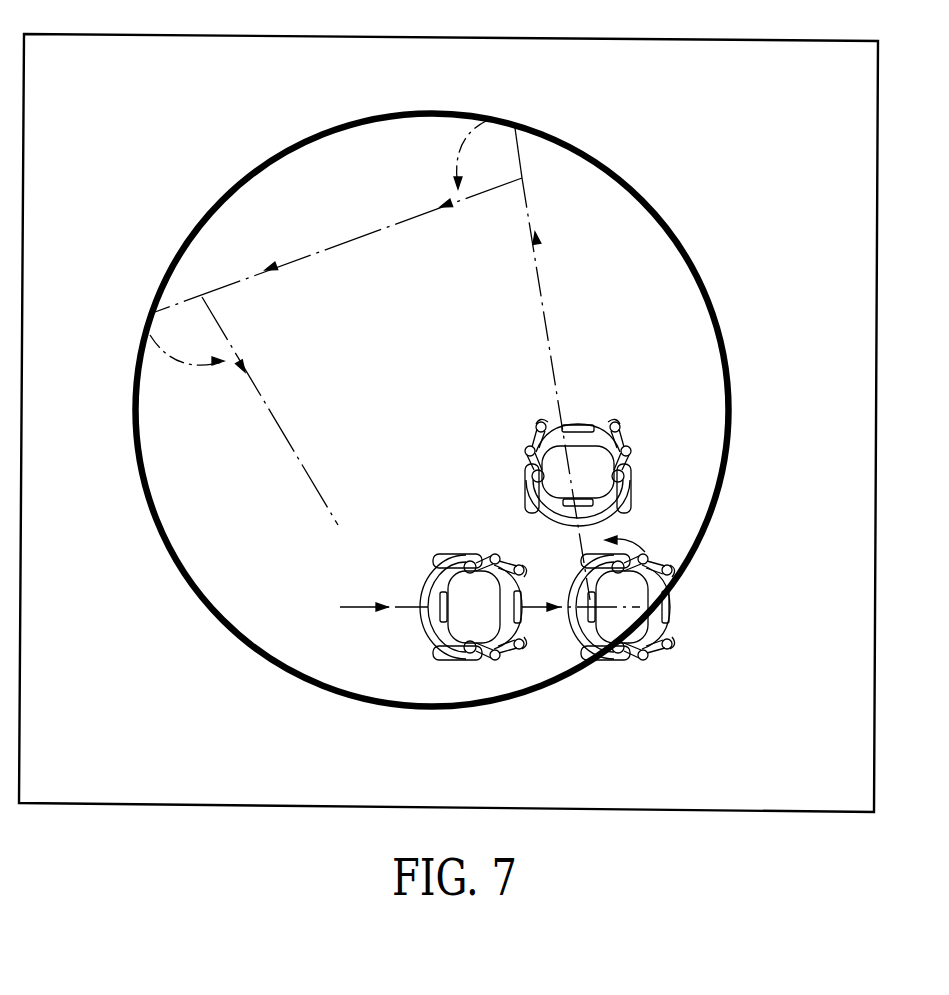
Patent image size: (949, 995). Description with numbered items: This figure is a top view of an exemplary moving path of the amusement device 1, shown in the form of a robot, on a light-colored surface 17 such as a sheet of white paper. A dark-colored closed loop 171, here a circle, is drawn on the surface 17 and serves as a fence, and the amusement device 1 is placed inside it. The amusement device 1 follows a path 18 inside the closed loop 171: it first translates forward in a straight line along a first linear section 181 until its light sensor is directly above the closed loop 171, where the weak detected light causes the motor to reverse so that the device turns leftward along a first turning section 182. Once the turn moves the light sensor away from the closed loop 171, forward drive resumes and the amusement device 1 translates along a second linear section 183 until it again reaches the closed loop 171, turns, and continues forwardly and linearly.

The amusement device 1 is at (472, 615).
The surface 17 is at (845, 213).
The closed loop 171 is at (665, 217).
The path 18 is at (362, 607).
The first linear section 181 is at (548, 612).
The first turning section 182 is at (645, 552).
The second linear section 183 is at (545, 308).